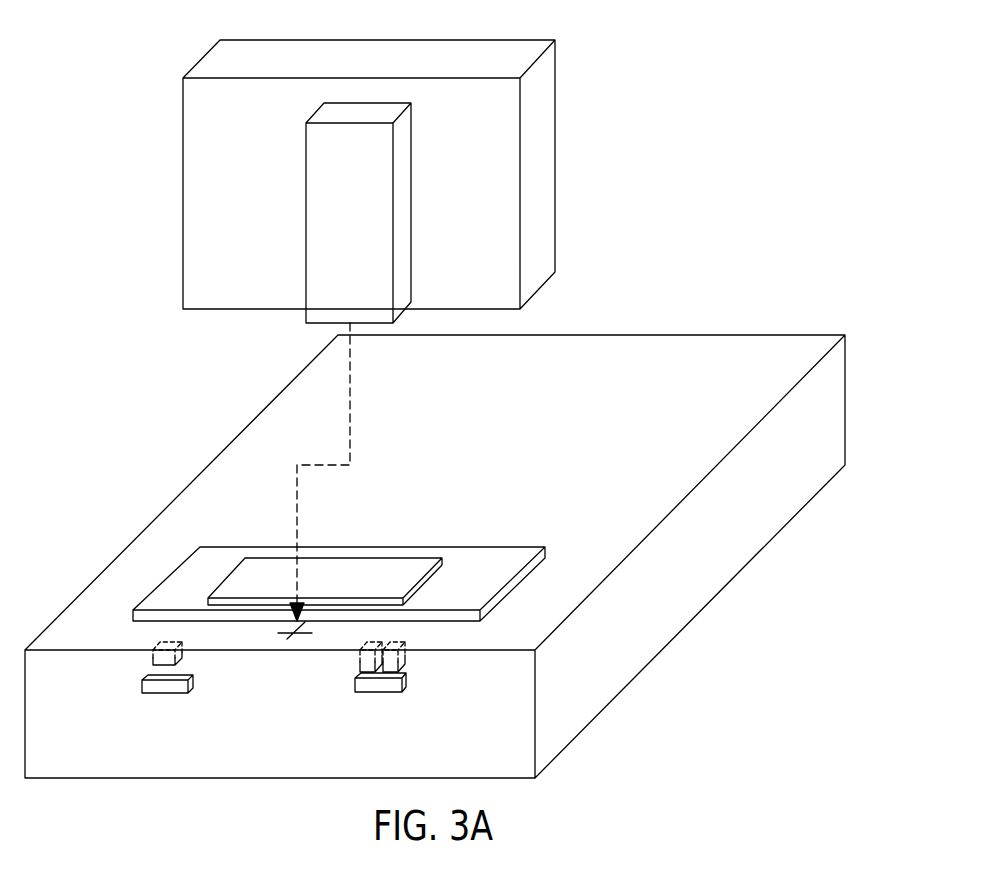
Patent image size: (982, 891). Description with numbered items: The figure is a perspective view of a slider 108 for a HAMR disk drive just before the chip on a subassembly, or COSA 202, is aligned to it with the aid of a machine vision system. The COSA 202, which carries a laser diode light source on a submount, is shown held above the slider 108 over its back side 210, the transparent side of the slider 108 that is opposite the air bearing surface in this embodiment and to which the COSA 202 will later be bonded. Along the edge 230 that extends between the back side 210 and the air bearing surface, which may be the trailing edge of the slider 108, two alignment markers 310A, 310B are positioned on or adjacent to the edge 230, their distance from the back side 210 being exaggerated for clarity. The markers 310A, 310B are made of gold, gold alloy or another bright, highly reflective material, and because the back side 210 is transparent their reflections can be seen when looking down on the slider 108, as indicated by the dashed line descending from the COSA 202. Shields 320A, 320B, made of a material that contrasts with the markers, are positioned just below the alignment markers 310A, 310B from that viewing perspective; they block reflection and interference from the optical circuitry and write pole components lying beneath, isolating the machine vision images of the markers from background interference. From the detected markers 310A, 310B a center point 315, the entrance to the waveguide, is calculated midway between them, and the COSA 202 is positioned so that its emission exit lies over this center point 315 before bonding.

The chip on a subassembly (COSA) 202 is at (547, 160).
The back side 210 is at (723, 350).
The slider 108 is at (703, 592).
The edge 230 is at (62, 767).
The center point 315 is at (287, 640).
The alignment marker 310A is at (168, 663).
The alignment marker 310B is at (373, 661).
The shield 320A is at (165, 687).
The shield 320B is at (378, 688).